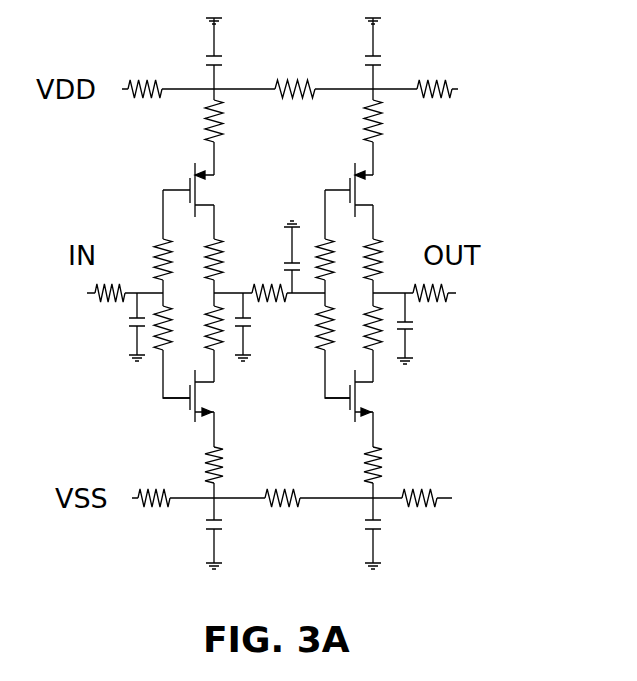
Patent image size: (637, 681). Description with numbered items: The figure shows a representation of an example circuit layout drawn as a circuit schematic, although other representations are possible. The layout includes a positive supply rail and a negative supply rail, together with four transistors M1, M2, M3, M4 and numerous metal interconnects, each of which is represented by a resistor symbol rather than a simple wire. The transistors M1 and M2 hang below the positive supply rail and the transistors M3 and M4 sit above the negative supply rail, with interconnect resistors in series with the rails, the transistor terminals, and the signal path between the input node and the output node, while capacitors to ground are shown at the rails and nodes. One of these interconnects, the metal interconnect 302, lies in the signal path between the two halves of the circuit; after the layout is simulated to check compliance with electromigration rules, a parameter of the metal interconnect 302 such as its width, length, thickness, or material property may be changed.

The metal interconnect 302 is at (272, 302).
The transistor M1 is at (213, 190).
The transistor M2 is at (374, 190).
The transistor M3 is at (213, 396).
The transistor M4 is at (374, 396).